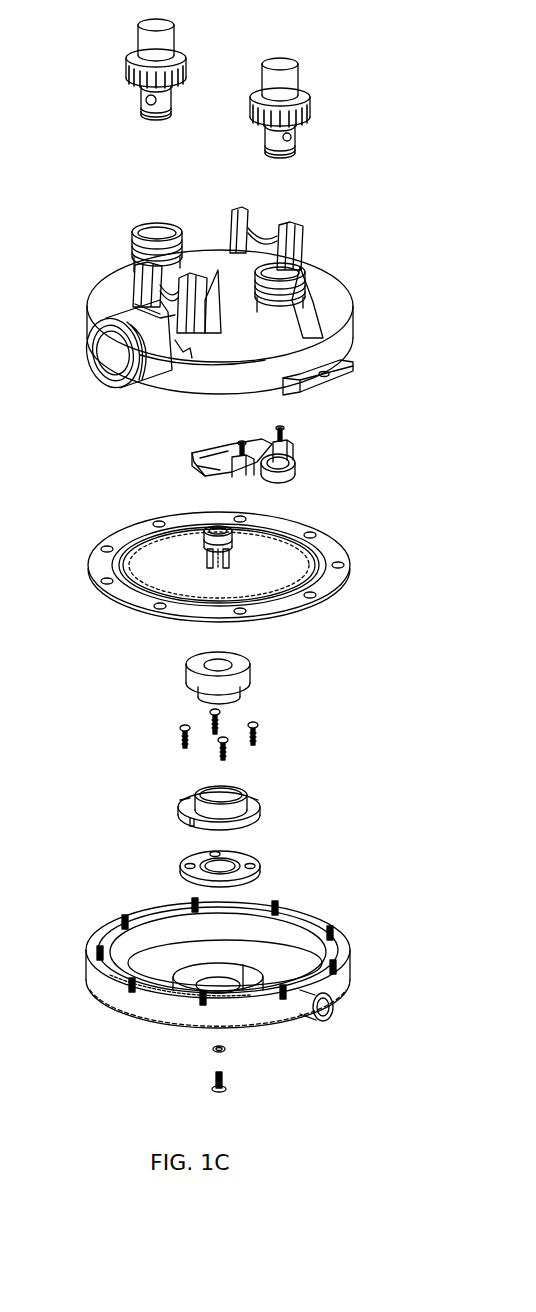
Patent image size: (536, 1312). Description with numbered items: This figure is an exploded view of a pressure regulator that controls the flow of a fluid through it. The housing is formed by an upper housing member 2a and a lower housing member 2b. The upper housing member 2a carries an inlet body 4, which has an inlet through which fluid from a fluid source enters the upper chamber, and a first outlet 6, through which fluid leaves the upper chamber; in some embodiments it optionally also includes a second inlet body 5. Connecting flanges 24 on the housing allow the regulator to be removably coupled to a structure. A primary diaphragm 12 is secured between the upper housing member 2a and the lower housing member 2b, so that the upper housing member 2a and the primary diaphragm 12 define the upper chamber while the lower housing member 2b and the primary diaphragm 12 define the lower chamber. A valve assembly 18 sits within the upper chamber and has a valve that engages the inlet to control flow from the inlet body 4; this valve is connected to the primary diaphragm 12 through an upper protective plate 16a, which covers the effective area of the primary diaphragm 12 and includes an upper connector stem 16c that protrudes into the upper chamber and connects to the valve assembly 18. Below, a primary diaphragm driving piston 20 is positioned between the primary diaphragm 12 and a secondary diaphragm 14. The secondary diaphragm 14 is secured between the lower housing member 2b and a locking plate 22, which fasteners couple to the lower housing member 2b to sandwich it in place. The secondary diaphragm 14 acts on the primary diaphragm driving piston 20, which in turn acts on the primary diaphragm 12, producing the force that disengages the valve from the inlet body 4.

The second inlet body 5 is at (137, 38).
The inlet body 4 is at (296, 82).
The upper housing member 2a is at (334, 308).
The first outlet 6 is at (107, 350).
The connecting flanges 24 is at (352, 367).
The valve assembly 18 is at (295, 475).
The primary diaphragm 12 is at (345, 577).
The upper protective plate 16a is at (155, 557).
The upper connector stem 16c is at (208, 556).
The primary diaphragm driving piston 20 is at (252, 670).
The locking plate 22 is at (260, 803).
The secondary diaphragm 14 is at (258, 866).
The lower housing member 2b is at (350, 975).